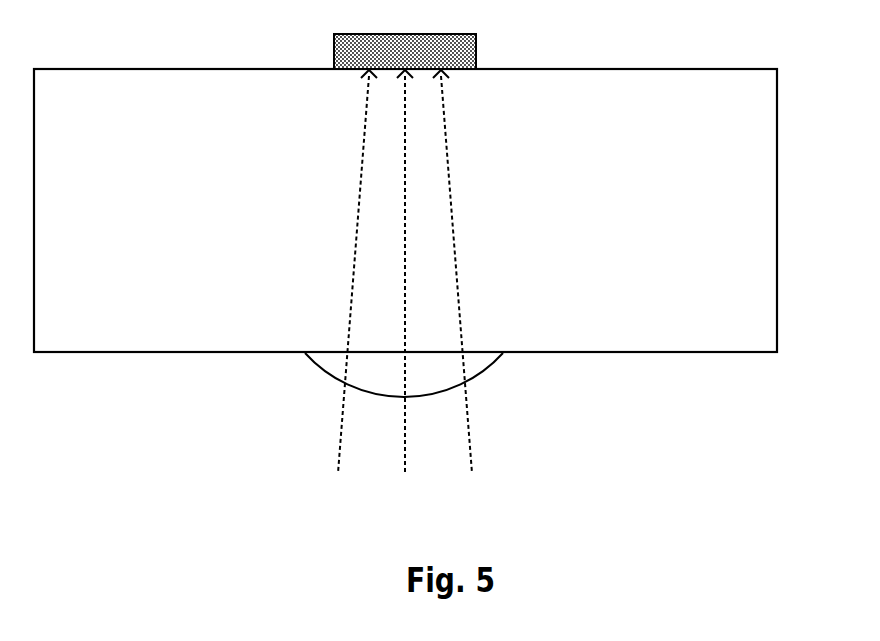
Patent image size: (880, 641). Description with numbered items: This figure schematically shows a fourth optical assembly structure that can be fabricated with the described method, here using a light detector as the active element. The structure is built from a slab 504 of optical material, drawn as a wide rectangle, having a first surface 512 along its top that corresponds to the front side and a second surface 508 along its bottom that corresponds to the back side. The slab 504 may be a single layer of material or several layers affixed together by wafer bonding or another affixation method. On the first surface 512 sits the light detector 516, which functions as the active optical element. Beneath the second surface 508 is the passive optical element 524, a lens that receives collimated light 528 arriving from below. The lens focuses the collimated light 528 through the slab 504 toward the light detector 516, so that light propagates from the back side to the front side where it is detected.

The slab 504 is at (136, 322).
The second surface 508 is at (157, 353).
The first surface 512 is at (175, 69).
The light detector 516 is at (478, 52).
The passive optical element 524 is at (496, 374).
The collimated light 528 is at (494, 485).